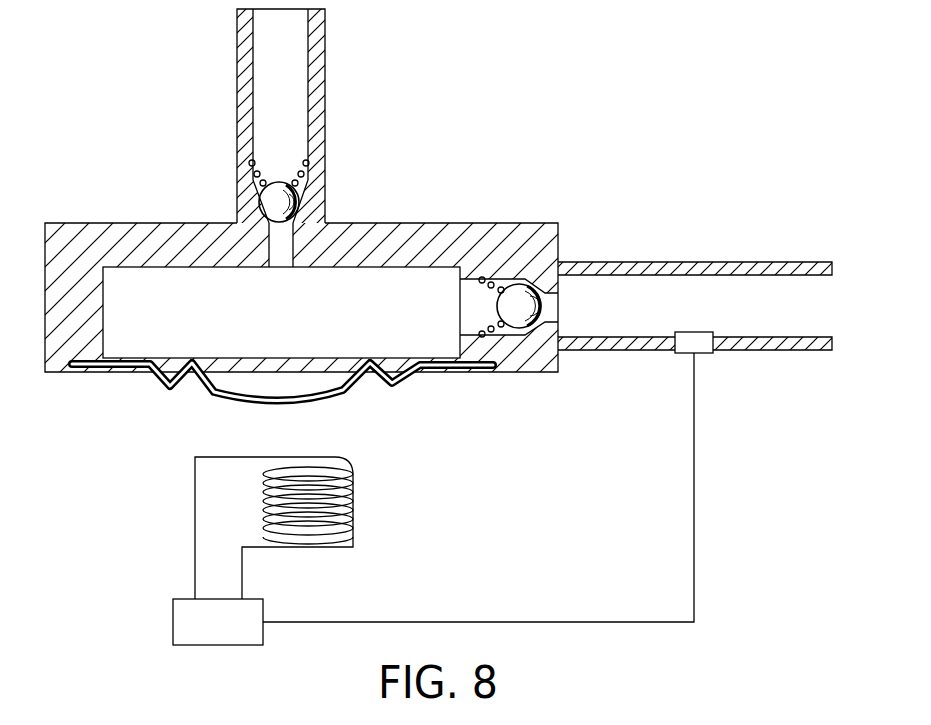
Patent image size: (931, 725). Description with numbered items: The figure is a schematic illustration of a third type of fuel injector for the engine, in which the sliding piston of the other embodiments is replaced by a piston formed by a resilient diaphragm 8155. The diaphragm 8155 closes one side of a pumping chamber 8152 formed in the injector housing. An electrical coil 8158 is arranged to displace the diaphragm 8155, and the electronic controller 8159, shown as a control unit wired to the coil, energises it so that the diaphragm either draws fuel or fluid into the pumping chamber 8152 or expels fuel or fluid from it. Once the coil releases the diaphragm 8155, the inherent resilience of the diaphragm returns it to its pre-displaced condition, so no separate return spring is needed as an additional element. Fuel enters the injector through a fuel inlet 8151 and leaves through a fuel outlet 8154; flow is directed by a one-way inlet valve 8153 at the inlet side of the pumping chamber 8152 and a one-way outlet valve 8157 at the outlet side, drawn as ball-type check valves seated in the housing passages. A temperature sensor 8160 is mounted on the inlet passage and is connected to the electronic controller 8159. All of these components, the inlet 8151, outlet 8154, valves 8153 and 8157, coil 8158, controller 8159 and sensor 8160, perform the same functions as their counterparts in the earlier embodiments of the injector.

The fuel inlet 8151 is at (740, 262).
The pumping chamber 8152 is at (305, 341).
The one-way inlet valve 8153 is at (541, 306).
The fuel outlet 8154 is at (326, 91).
The resilient diaphragm 8155 is at (160, 385).
The one-way outlet valve 8157 is at (285, 203).
The electrical coil 8158 is at (353, 492).
The electronic controller 8159 is at (173, 599).
The temperature sensor 8160 is at (713, 353).